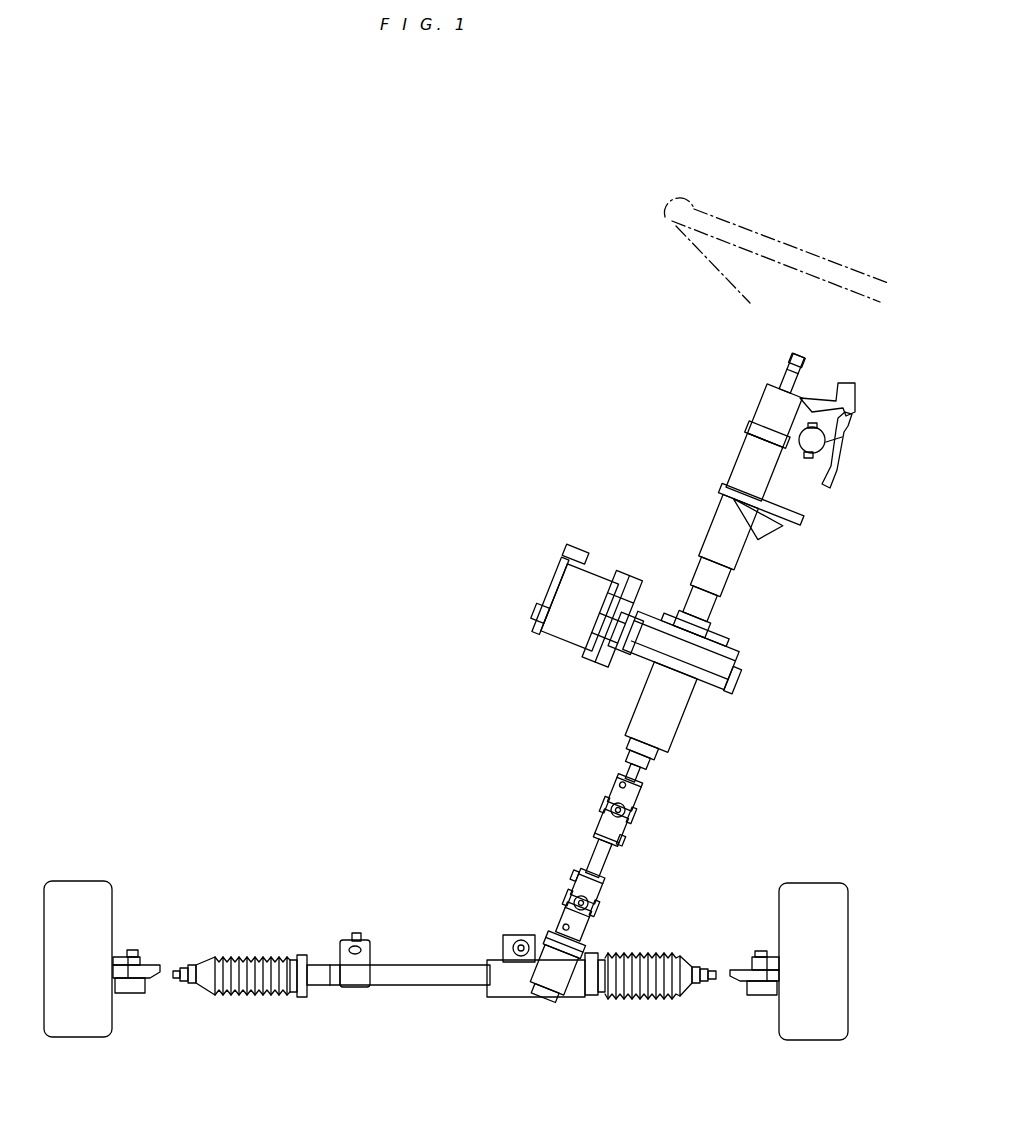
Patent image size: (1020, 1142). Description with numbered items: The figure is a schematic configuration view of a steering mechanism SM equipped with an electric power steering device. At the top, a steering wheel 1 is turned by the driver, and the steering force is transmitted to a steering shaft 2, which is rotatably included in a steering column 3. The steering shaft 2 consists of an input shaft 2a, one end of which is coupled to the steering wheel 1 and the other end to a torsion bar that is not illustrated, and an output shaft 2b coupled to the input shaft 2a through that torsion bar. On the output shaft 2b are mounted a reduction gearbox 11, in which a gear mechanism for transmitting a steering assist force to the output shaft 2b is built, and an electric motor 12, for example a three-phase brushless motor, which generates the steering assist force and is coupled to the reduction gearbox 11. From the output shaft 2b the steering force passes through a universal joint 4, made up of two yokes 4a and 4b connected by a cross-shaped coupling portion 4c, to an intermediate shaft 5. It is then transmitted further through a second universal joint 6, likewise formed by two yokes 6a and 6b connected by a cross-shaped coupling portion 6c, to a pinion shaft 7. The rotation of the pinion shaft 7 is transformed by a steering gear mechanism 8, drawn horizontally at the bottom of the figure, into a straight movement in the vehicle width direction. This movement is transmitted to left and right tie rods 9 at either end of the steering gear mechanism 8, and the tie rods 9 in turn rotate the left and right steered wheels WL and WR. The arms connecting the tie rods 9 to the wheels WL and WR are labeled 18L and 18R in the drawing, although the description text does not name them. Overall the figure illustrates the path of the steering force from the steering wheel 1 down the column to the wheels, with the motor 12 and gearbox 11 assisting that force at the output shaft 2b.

The steering wheel 1 is at (692, 212).
The steering shaft 2 is at (789, 365).
The input shaft 2a is at (792, 356).
The output shaft 2b is at (645, 769).
The steering column 3 is at (752, 456).
The steering mechanism SM is at (598, 440).
The reduction gearbox 11 is at (728, 661).
The electric motor 12 is at (572, 581).
The universal joint 4 is at (581, 808).
The yoke 4a is at (611, 784).
The yoke 4b is at (590, 828).
The cross-shaped coupling portion 4c is at (612, 806).
The intermediate shaft 5 is at (608, 859).
The universal joint 6 is at (535, 900).
The yoke 6a is at (578, 880).
The yoke 6b is at (571, 921).
The cross-shaped coupling portion 6c is at (576, 903).
The pinion shaft 7 is at (583, 946).
The steering gear mechanism 8 is at (423, 999).
The tie rods 9 is at (177, 960).
The left steering knuckle arm 18L is at (130, 992).
The right steering knuckle arm 18R is at (762, 996).
The steering wheel (left steered wheel) WL is at (80, 880).
The steering wheel (right steered wheel) WR is at (817, 882).